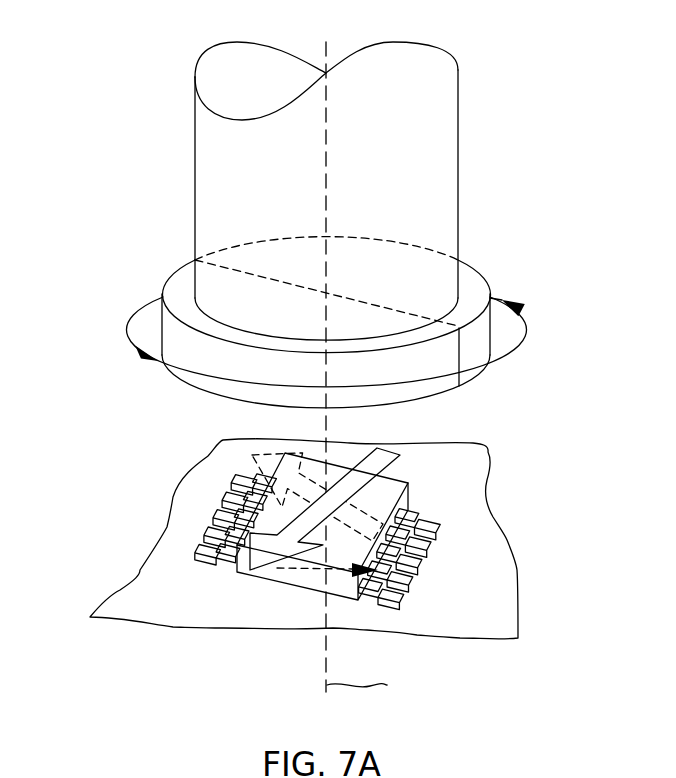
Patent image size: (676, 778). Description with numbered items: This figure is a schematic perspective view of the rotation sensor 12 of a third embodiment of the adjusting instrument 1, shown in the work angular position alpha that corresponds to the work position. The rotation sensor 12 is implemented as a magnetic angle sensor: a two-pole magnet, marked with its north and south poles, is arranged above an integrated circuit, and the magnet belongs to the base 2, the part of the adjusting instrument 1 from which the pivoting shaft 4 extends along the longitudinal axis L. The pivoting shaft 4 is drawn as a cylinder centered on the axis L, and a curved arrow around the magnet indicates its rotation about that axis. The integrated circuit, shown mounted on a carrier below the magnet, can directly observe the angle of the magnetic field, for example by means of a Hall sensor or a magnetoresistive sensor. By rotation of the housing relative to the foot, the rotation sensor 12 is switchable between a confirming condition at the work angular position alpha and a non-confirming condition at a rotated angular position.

The adjusting instrument 1 is at (126, 162).
The base 2 is at (513, 288).
The pivoting shaft 4 is at (442, 148).
The rotation sensor 12 is at (186, 455).